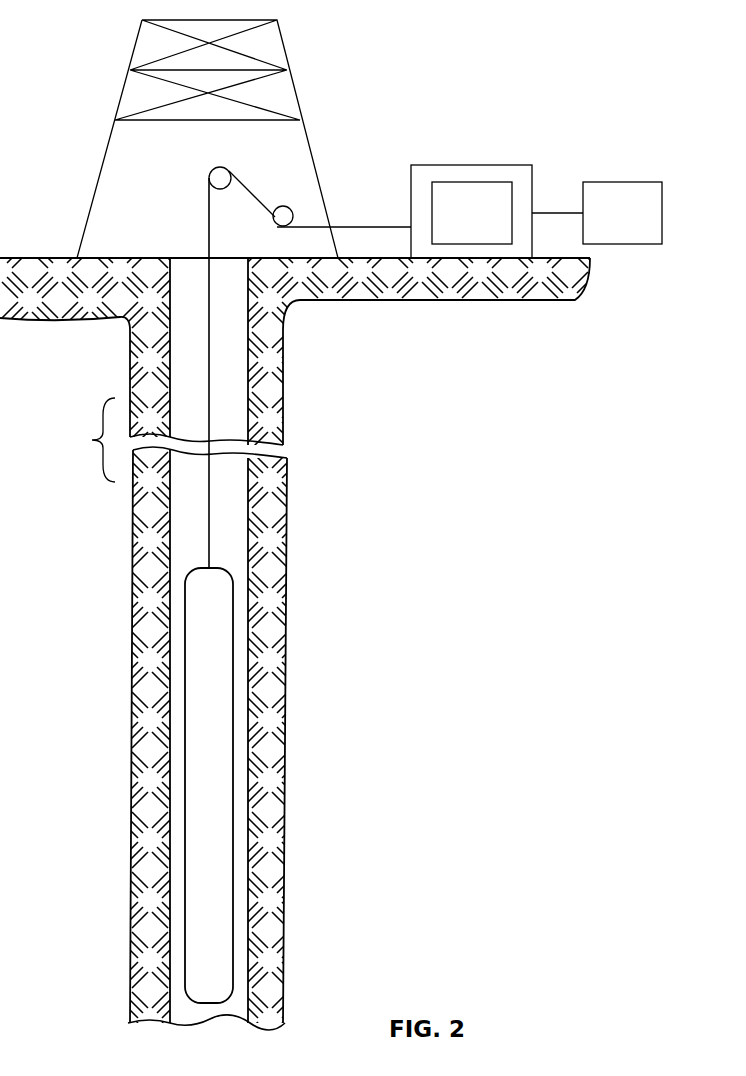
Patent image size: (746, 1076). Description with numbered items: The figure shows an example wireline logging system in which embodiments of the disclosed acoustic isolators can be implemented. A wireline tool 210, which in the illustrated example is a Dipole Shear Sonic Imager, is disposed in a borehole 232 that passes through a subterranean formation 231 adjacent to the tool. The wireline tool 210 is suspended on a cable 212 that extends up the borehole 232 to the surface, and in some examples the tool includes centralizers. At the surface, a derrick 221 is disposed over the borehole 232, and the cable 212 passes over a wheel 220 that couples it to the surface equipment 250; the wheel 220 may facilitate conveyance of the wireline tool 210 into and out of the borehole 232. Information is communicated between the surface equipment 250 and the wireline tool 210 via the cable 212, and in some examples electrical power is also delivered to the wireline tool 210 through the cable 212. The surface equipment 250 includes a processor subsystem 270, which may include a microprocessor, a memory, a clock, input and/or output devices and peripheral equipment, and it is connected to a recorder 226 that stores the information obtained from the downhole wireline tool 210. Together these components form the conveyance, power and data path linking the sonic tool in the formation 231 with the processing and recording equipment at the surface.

The derrick 221 is at (280, 40).
The wheel 220 is at (210, 172).
The surface equipment 250 is at (405, 185).
The processor subsystem 270 is at (470, 192).
The recorder 226 is at (632, 182).
The subterranean formation 231 is at (143, 895).
The borehole 232 is at (183, 545).
The cable 212 is at (213, 393).
The wireline tool 210 is at (213, 940).